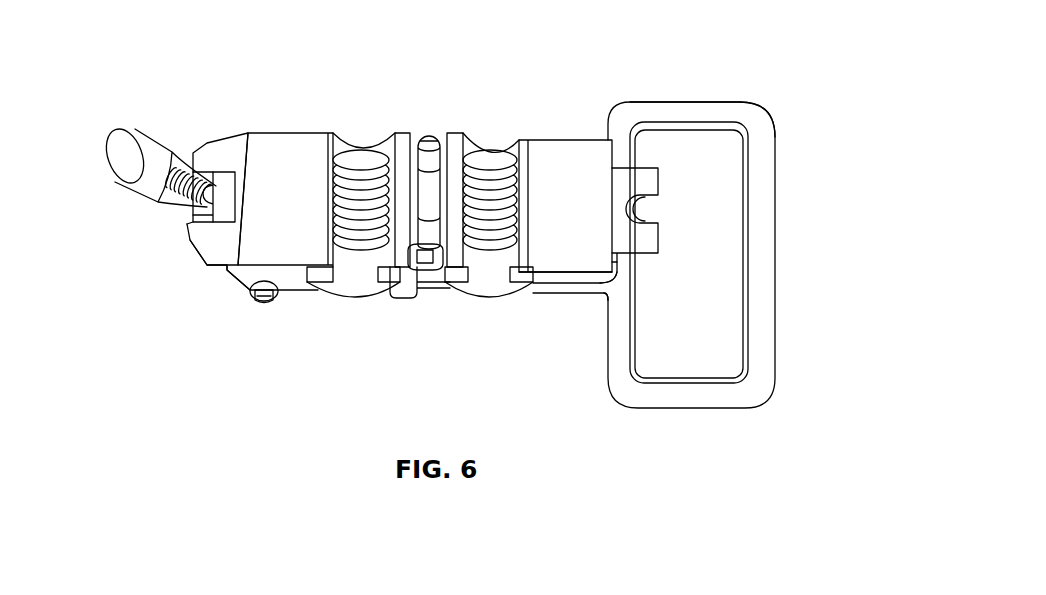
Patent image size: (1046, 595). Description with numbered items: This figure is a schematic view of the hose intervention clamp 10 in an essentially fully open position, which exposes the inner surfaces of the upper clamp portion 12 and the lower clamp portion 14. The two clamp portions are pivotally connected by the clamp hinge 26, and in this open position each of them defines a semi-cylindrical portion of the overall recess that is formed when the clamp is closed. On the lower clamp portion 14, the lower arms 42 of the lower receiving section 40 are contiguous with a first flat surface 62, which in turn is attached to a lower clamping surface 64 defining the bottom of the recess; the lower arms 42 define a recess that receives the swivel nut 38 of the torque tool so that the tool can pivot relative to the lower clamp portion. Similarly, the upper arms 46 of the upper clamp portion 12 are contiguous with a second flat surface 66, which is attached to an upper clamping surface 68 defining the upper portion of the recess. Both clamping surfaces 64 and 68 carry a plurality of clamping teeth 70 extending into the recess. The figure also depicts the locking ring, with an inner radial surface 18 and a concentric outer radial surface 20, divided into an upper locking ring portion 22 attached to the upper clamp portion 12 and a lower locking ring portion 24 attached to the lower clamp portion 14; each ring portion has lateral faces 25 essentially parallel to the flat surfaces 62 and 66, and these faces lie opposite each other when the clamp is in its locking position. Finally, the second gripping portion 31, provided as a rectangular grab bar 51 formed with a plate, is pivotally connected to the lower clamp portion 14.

The hose intervention clamp 10 is at (226, 83).
The upper clamp portion 12 is at (522, 138).
The lower clamp portion 14 is at (410, 135).
The inner radial surface 18 is at (487, 283).
The outer radial surface 20 is at (498, 292).
The upper locking ring portion 22 is at (507, 293).
The lower locking ring portion 24 is at (320, 287).
The lateral faces 25 is at (320, 264).
The clamp hinge 26 is at (428, 133).
The second gripping portion 31 is at (763, 328).
The swivel nut 38 is at (193, 215).
The lower receiving section 40 is at (208, 279).
The lower arms 42 is at (208, 235).
The upper arms 46 is at (615, 295).
The grab bar 51 is at (733, 112).
The first flat surface 62 is at (252, 295).
The lower clamping surface 64 is at (356, 280).
The second flat surface 66 is at (562, 240).
The upper clamping surface 68 is at (472, 285).
The clamping teeth 70 is at (473, 147).